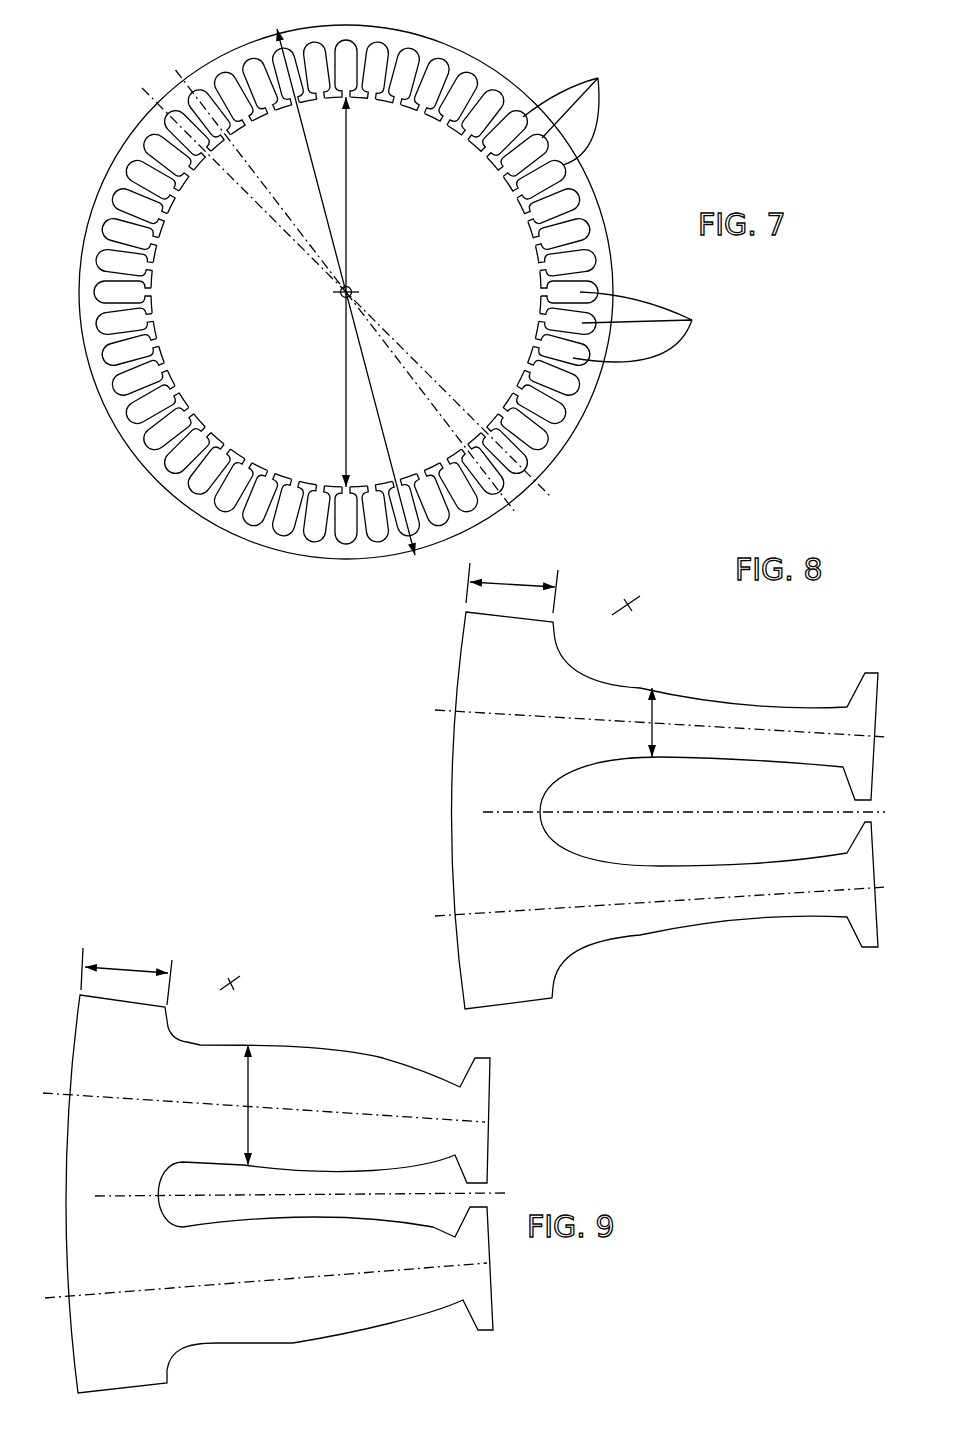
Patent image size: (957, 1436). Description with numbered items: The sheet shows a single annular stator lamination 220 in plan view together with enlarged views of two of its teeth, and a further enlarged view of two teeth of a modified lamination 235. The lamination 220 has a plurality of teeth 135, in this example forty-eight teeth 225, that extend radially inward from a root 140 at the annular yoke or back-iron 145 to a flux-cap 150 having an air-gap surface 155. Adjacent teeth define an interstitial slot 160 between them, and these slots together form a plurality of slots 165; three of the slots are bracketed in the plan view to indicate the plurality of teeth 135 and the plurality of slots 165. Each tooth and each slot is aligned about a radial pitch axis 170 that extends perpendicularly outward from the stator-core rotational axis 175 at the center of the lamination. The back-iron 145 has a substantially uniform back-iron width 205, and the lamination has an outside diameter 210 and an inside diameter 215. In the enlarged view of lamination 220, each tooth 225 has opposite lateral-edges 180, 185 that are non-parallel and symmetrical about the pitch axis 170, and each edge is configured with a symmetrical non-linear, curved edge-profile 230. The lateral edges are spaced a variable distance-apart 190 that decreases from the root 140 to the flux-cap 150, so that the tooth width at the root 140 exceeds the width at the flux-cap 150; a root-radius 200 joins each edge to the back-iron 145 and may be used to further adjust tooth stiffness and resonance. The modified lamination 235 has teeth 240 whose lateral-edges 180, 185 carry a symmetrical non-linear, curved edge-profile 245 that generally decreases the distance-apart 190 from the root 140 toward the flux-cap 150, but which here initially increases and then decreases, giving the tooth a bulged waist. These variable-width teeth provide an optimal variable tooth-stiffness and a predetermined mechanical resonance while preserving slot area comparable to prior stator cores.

In FIG. 7, the plurality of teeth 135 is at (642, 325).
In FIG. 7, the root 140 is at (100, 338).
In FIG. 8, the root 140 is at (547, 740).
In FIG. 9, the root 140 is at (163, 1123).
In FIG. 7, the annular yoke 145 is at (140, 127).
In FIG. 7, the flux-cap 150 is at (165, 343).
In FIG. 8, the flux-cap 150 is at (877, 673).
In FIG. 9, the flux-cap 150 is at (493, 1057).
In FIG. 7, the air-gap surface 155 is at (513, 173).
In FIG. 8, the air-gap surface 155 is at (875, 758).
In FIG. 9, the air-gap surface 155 is at (487, 1143).
In FIG. 7, the interstitial slot 160 is at (503, 110).
In FIG. 8, the interstitial slot 160 is at (547, 832).
In FIG. 9, the interstitial slot 160 is at (160, 1215).
In FIG. 7, the plurality of slots 165 is at (572, 104).
In FIG. 7, the radial pitch axis 170 is at (262, 176).
In FIG. 8, the radial pitch axis 170 is at (432, 710).
In FIG. 9, the radial pitch axis 170 is at (43, 1094).
In FIG. 7, the stator-core rotational axis 175 is at (342, 300).
In FIG. 7, the lateral-edge 180 is at (190, 433).
In FIG. 8, the lateral-edge 180 is at (723, 700).
In FIG. 9, the lateral-edge 180 is at (342, 1046).
In FIG. 7, the lateral-edge 185 is at (173, 463).
In FIG. 8, the lateral-edge 185 is at (601, 768).
In FIG. 9, the lateral-edge 185 is at (190, 1163).
In FIG. 8, the distance-apart 190 is at (652, 688).
In FIG. 9, the distance-apart 190 is at (248, 1045).
In FIG. 8, the root-radius 200 is at (570, 648).
In FIG. 9, the root-radius 200 is at (175, 1023).
In FIG. 8, the back-iron width 205 is at (522, 584).
In FIG. 9, the back-iron width 205 is at (133, 970).
In FIG. 7, the outside diameter 210 is at (414, 558).
In FIG. 7, the inside diameter 215 is at (346, 560).
In FIG. 7, the lamination 220 is at (598, 202).
In FIG. 8, the lamination 220 is at (457, 685).
In FIG. 7, the teeth 225 is at (134, 294).
In FIG. 8, the teeth 225 is at (760, 707).
In FIG. 8, the edge-profile 230 is at (791, 702).
In FIG. 9, the edge-profile 230 is at (259, 1214).
In FIG. 9, the modified lamination 235 is at (72, 1068).
In FIG. 9, the teeth 240 is at (303, 1045).
In FIG. 9, the edge-profile 245 is at (403, 1058).